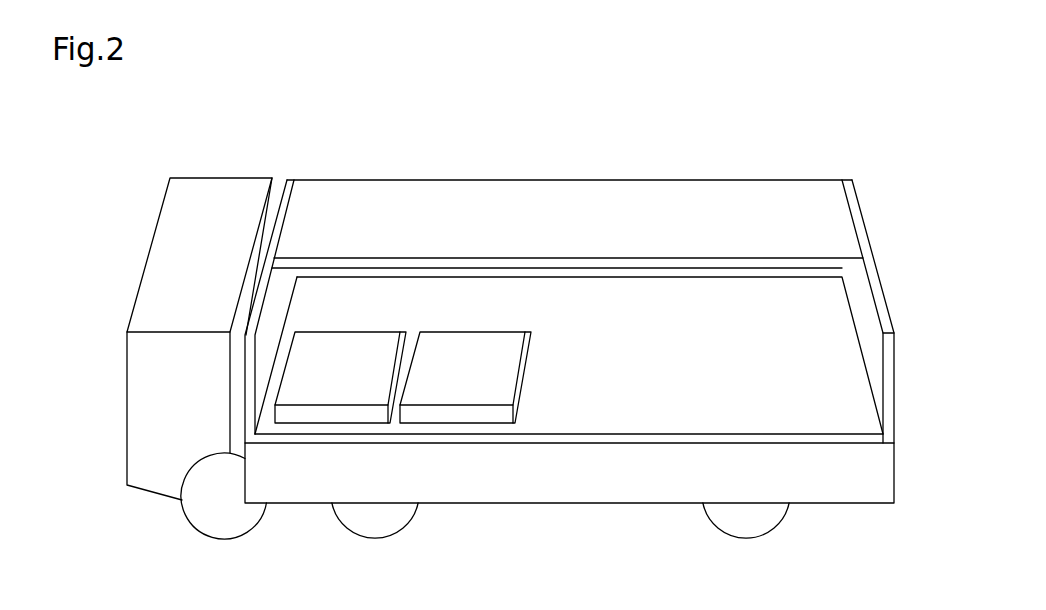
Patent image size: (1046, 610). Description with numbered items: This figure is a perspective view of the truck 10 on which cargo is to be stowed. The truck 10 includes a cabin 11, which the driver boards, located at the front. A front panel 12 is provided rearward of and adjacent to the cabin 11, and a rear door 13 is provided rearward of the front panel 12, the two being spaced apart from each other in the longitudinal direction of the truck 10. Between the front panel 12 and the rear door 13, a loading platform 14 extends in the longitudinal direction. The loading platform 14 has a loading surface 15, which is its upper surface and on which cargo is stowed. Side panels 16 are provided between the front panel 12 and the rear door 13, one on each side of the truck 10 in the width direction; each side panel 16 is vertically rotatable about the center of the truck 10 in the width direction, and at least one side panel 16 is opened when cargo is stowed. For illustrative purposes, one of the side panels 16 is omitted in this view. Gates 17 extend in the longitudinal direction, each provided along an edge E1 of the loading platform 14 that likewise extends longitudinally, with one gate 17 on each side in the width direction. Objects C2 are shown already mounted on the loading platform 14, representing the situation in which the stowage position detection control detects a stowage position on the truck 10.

The truck 10 is at (110, 405).
The cabin 11 is at (211, 186).
The front panel 12 is at (265, 286).
The rear door 13 is at (886, 284).
The loading platform 14 is at (648, 436).
The loading surface 15 is at (765, 378).
The side panel 16 is at (627, 188).
The gate 17 is at (587, 504).
The object C2 is at (340, 358).
The edge E1 is at (595, 434).